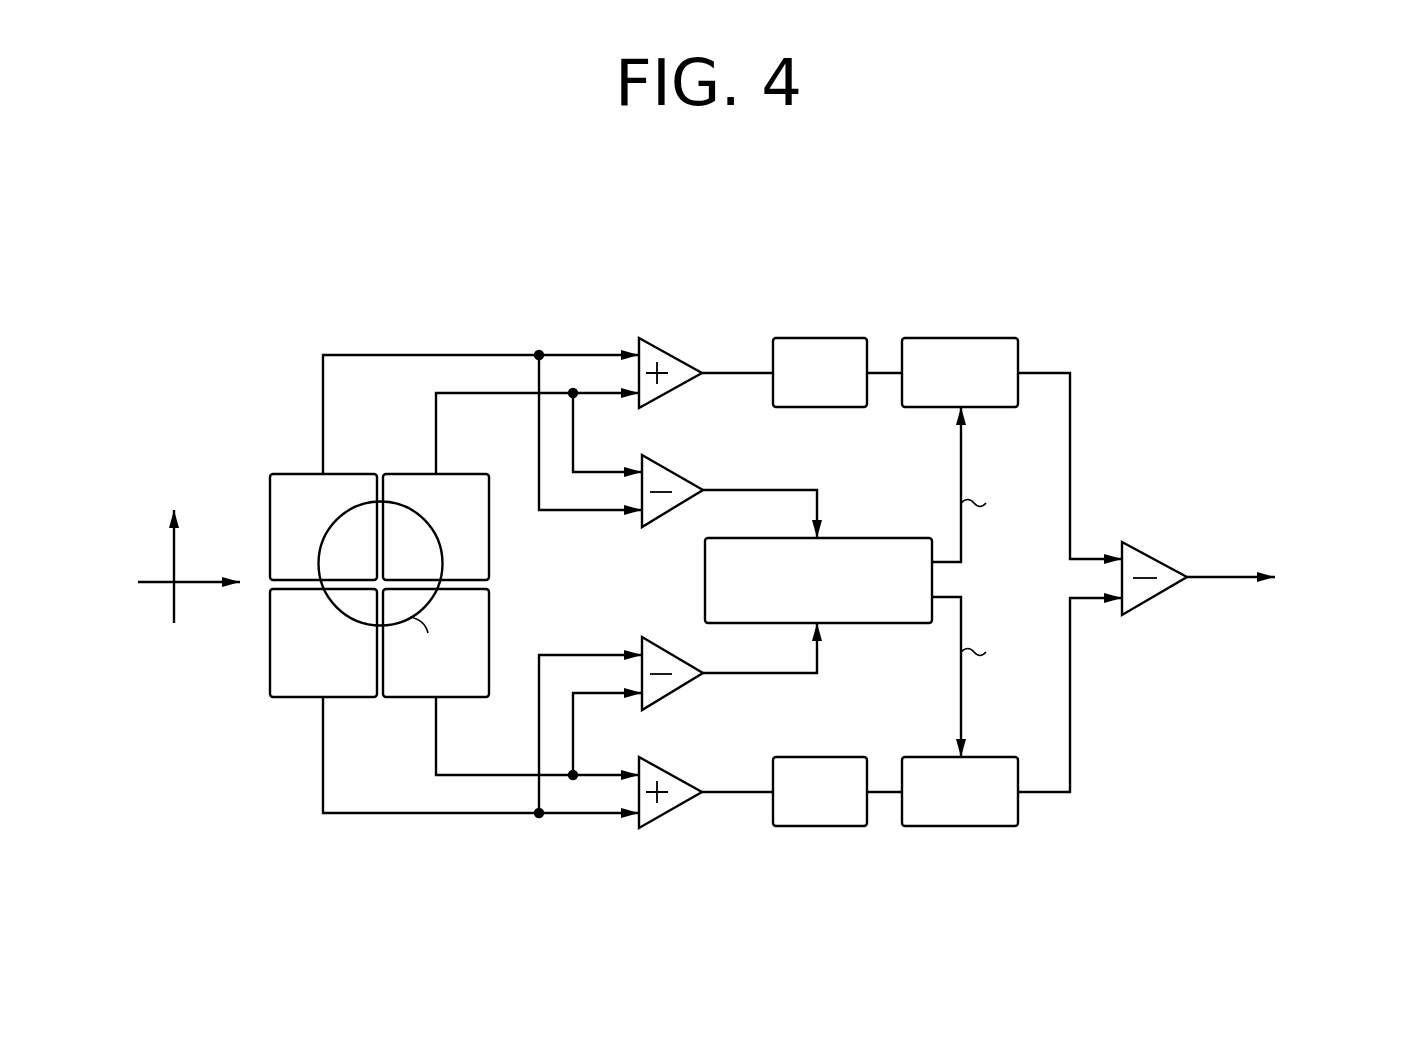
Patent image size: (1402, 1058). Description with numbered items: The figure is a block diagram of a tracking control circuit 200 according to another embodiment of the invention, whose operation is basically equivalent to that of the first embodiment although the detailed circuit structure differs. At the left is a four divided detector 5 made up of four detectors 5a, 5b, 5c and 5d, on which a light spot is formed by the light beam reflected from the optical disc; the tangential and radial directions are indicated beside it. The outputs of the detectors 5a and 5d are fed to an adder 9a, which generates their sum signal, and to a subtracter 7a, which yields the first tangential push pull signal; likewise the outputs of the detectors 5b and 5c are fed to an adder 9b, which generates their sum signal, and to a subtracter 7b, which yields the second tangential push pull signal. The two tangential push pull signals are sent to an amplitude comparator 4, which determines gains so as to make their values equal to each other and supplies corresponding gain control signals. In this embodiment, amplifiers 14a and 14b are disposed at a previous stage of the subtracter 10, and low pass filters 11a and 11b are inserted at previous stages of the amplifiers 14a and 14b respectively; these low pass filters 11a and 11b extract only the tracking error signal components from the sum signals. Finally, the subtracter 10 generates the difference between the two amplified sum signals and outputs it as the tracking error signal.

The tracking control circuit 200 is at (666, 248).
The four divided detector 5 is at (291, 447).
The detector 5a is at (489, 560).
The detector 5b is at (412, 700).
The detector 5c is at (283, 700).
The detector 5d is at (272, 505).
The adder 9a is at (676, 357).
The adder 9b is at (680, 806).
The subtracter 7a is at (678, 475).
The subtracter 7b is at (680, 688).
The low pass filter 11a is at (830, 338).
The low pass filter 11b is at (830, 826).
The amplifier 14a is at (958, 338).
The amplifier 14b is at (960, 826).
The amplitude comparator 4 is at (888, 623).
The subtracter 10 is at (1155, 559).